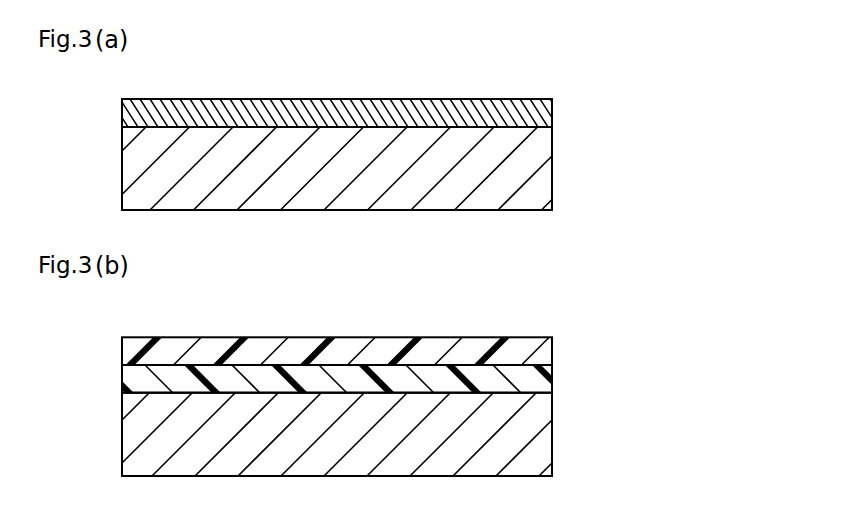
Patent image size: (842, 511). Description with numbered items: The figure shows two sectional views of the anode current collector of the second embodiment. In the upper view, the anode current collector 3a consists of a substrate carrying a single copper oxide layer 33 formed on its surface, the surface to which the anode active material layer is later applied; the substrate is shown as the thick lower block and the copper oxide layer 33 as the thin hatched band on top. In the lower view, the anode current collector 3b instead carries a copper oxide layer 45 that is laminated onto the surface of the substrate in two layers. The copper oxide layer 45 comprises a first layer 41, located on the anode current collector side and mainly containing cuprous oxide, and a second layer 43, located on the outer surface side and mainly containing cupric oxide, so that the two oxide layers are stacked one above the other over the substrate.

The copper oxide layer 33 is at (553, 104).
The first layer 41 is at (553, 370).
The second layer 43 is at (553, 345).
The copper oxide layer 45 is at (460, 356).
The anode current collector 3a is at (465, 68).
The anode current collector 3b is at (465, 306).